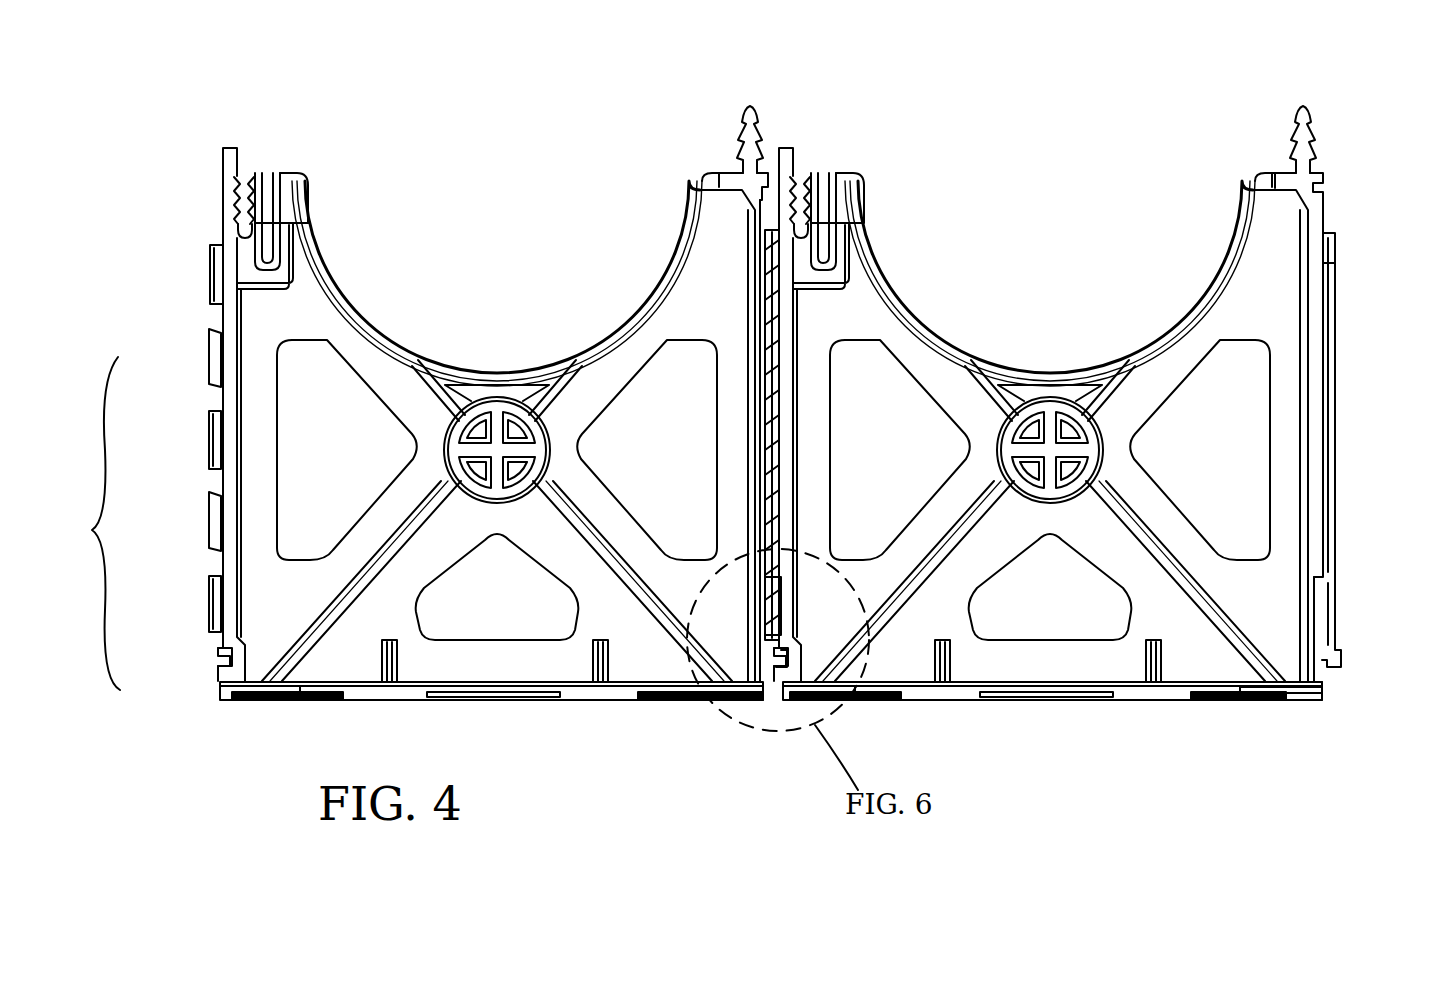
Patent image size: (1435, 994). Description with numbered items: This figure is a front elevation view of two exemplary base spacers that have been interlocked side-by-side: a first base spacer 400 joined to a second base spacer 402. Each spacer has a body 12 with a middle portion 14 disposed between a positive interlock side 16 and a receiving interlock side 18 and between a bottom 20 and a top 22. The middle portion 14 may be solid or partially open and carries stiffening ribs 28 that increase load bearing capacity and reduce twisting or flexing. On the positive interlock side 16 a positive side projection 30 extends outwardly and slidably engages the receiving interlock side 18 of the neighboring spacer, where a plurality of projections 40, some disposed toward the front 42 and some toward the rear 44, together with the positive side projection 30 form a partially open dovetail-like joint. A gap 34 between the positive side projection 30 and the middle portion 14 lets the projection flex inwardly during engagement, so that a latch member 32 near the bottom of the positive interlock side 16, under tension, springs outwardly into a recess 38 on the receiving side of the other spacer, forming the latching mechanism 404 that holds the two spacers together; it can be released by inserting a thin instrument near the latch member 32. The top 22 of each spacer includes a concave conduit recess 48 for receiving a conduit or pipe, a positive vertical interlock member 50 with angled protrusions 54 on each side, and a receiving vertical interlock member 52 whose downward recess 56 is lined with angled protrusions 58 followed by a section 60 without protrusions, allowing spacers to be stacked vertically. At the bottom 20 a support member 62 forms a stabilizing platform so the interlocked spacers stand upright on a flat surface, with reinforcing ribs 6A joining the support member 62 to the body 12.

The first base spacer 400 is at (592, 221).
The second base spacer 402 is at (1160, 231).
The latching mechanism 404 is at (768, 724).
The body 12 is at (599, 728).
The middle portion 14 is at (380, 484).
The positive interlock side 16 is at (1378, 315).
The receiving interlock side 18 is at (198, 312).
The bottom 20 is at (476, 718).
The top 22 is at (535, 346).
The stiffening ribs 28 is at (325, 622).
The positive side projection 30 is at (1340, 485).
The latch member 32 is at (1342, 658).
The gap 34 is at (1332, 681).
The recess 38 is at (201, 672).
The plurality of projections 40 is at (81, 523).
The projections toward the front 42 is at (207, 362).
The projections toward the rear 44 is at (207, 440).
The conduit recess 48 is at (385, 345).
The positive vertical interlock member 50 is at (784, 113).
The receiving vertical interlock member 52 is at (252, 154).
The angled protrusions 54 is at (738, 120).
The recess 56 is at (262, 242).
The angled protrusions 58 is at (830, 190).
The section having no angled protrusions 60 is at (805, 250).
The support member 62 is at (382, 695).
The support post 6A is at (392, 640).